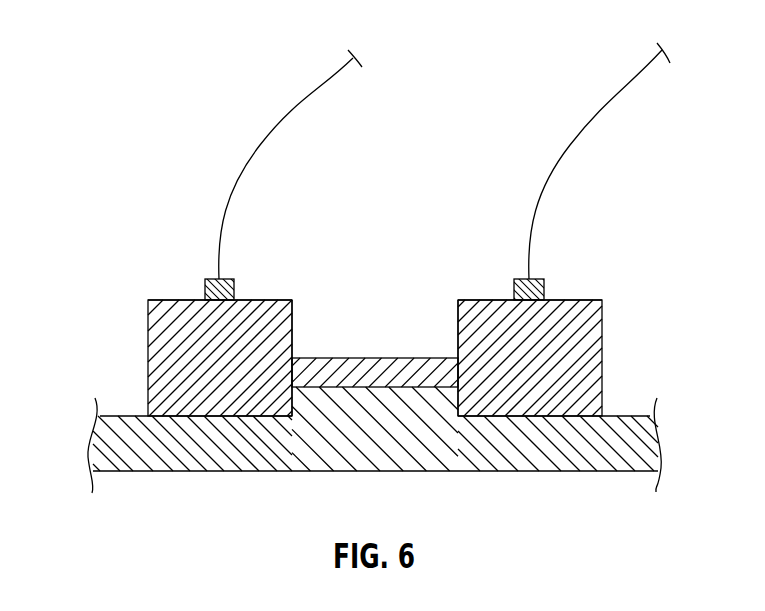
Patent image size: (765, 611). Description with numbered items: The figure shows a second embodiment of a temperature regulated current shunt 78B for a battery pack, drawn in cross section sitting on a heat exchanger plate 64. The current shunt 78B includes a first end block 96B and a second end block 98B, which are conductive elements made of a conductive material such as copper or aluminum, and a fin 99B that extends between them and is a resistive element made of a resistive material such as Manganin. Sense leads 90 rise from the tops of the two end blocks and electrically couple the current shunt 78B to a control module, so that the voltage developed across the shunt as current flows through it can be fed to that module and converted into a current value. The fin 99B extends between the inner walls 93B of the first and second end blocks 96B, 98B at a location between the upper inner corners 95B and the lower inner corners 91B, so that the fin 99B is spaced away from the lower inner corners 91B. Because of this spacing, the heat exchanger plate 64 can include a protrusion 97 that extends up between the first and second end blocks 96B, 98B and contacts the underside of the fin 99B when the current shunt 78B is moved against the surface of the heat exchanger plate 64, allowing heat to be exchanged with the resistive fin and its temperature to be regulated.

The current shunt 78B is at (138, 61).
The sense leads 90 is at (313, 100).
The upper inner corners 95B is at (292, 300).
The inner walls 93B is at (293, 343).
The fin 99B is at (362, 358).
The first end block 96B is at (182, 395).
The second end block 98B is at (573, 395).
The lower inner corners 91B is at (292, 418).
The heat exchanger plate 64 is at (356, 458).
The protrusion 97 is at (370, 400).